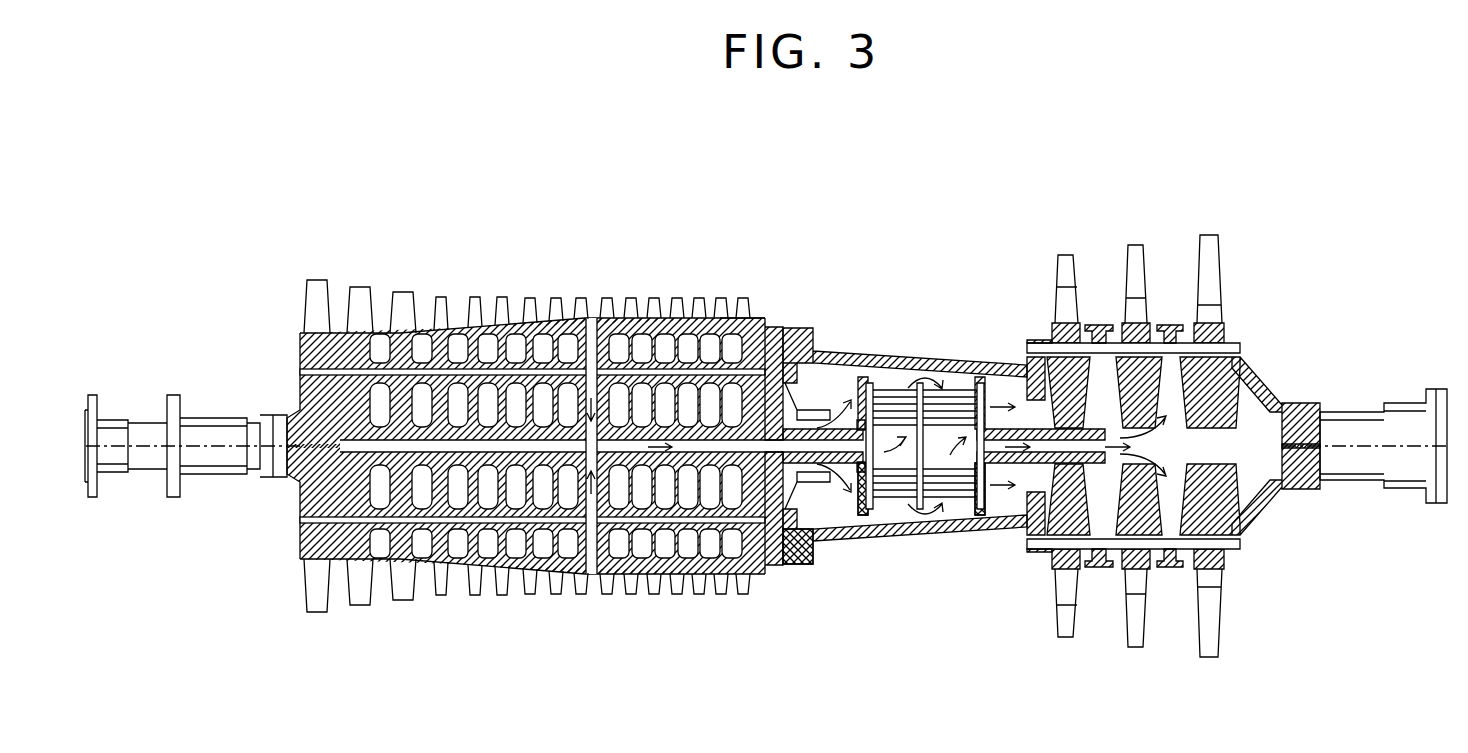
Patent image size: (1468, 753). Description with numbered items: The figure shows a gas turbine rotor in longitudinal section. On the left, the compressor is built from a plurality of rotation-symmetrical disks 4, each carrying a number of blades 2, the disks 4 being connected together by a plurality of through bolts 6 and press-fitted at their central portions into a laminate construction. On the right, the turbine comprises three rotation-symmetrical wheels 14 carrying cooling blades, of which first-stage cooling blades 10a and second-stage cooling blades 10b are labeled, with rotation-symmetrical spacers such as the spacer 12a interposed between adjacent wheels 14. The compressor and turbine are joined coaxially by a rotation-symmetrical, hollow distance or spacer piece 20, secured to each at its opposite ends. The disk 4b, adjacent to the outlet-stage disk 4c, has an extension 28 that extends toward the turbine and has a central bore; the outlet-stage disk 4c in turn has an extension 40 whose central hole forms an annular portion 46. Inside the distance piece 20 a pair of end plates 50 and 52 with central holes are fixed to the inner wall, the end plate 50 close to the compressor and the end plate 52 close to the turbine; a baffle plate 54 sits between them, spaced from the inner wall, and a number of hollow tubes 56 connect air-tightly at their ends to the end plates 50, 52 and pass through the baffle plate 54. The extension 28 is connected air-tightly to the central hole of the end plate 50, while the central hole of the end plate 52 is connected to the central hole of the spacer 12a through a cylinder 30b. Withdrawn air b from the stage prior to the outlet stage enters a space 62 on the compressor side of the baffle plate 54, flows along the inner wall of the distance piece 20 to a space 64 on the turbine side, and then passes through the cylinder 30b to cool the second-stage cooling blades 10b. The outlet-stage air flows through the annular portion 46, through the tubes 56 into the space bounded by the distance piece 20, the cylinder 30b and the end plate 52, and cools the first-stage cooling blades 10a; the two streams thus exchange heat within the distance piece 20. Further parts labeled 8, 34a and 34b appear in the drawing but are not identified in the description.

The blades 2 is at (363, 292).
The disks 4 is at (353, 337).
The disk 4b is at (733, 315).
The outlet-stage disk 4c is at (773, 322).
The through bolts 6 is at (307, 337).
The shaft 8 is at (220, 425).
The withdrawn air b is at (640, 440).
The radial passage spacer 34a is at (590, 315).
The spacer disc 34b is at (752, 315).
The first-stage cooling blades 10a is at (1067, 257).
The second-stage cooling blades 10b is at (1137, 252).
The spacer 12a is at (1095, 327).
The wheels 14 is at (1052, 328).
The distance or spacer piece 20 is at (905, 352).
The extension 28 is at (823, 403).
The cylinder 30b is at (998, 368).
The extension 40 is at (852, 372).
The annular portion 46 is at (777, 565).
The end plate 50 is at (855, 500).
The end plate 52 is at (998, 500).
The baffle plate 54 is at (950, 500).
The hollow tubes 56 is at (885, 510).
The space 62 is at (919, 512).
The space 64 is at (972, 510).